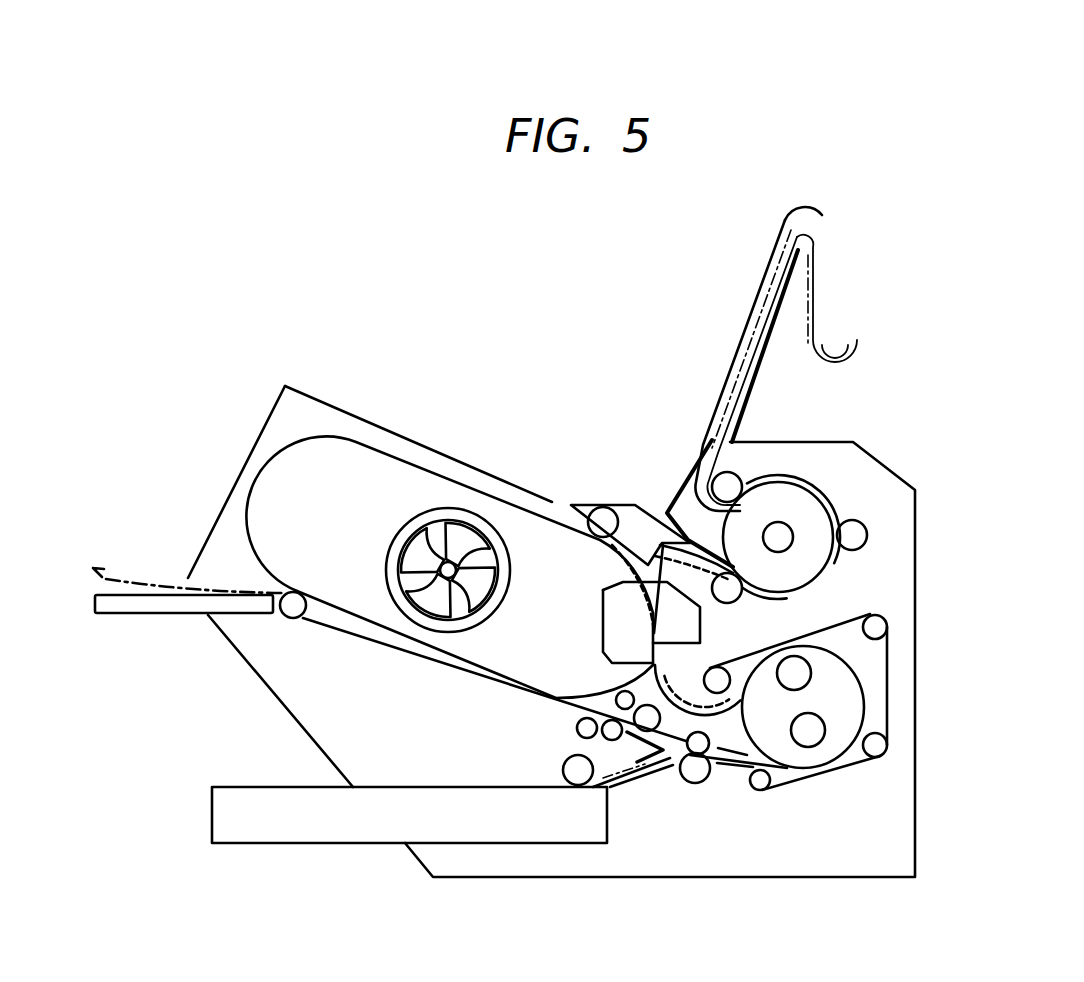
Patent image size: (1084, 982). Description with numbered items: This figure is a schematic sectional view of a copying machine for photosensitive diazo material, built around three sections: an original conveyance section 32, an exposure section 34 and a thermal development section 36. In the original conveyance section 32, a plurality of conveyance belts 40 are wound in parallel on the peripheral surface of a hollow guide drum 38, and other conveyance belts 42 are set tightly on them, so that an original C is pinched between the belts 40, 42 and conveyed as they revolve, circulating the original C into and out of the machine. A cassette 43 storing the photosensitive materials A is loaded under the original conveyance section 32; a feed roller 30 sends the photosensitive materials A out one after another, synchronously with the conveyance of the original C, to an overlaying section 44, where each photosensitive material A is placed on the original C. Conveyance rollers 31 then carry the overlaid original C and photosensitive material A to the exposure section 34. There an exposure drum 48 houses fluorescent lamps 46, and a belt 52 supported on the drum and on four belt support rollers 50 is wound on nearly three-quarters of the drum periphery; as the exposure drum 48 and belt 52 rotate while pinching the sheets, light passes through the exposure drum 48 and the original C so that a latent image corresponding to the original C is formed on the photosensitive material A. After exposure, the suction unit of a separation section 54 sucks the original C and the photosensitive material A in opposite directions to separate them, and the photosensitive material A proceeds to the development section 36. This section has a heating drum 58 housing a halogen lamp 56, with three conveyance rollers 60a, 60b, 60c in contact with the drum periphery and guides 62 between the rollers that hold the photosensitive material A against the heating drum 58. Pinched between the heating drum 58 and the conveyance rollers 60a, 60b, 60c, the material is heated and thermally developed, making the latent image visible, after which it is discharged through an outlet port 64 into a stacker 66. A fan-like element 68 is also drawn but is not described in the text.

The feed roller 30 is at (566, 760).
The conveyance rollers 31 is at (698, 786).
The original conveyance section 32 is at (293, 426).
The exposure section 34 is at (839, 734).
The thermal development section 36 is at (698, 518).
The hollow guide drum 38 is at (320, 445).
The conveyance belts 40 is at (386, 452).
The conveyance belts 42 is at (353, 640).
The cassette 43 is at (400, 785).
The overlaying section 44 is at (670, 771).
The fluorescent lamps 46 is at (808, 718).
The exposure drum 48 is at (843, 753).
The belt support rollers 50 is at (717, 667).
The belt 52 is at (797, 785).
The separation section 54 is at (645, 550).
The halogen lamp 56 is at (793, 542).
The heating drum 58 is at (733, 514).
The conveyance roller 60a is at (735, 597).
The conveyance roller 60b is at (867, 533).
The conveyance roller 60c is at (737, 472).
The guides 62 is at (814, 482).
The outlet port 64 is at (711, 432).
The stacker 66 is at (722, 354).
The fan 68 is at (502, 600).
The photosensitive material A is at (815, 258).
The original C is at (129, 580).